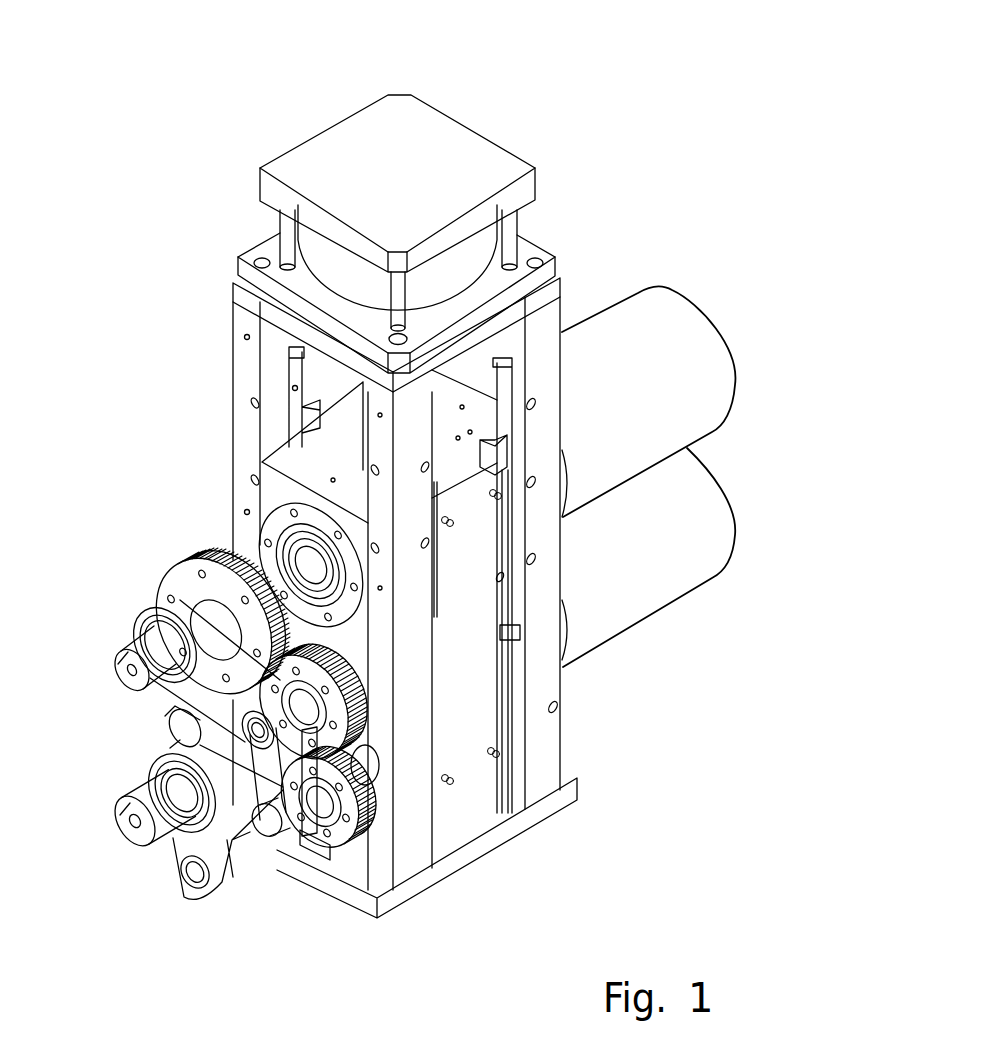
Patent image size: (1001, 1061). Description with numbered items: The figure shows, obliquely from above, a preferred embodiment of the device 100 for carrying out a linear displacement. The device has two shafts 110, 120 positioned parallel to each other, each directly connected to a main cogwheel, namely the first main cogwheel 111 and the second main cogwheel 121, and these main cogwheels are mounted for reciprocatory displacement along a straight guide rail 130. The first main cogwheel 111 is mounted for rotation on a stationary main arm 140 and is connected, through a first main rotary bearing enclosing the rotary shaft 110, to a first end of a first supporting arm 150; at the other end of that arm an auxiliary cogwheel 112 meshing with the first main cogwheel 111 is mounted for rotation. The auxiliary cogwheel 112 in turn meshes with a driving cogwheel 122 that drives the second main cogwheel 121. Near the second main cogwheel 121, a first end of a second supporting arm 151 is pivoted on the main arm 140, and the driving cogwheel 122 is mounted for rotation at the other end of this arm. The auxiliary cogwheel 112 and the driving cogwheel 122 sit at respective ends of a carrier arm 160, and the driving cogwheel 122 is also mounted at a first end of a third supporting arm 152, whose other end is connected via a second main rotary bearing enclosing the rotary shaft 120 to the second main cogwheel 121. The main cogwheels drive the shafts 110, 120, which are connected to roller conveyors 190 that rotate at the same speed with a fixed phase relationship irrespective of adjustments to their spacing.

The device 100 is at (119, 90).
The rotary shaft 110 is at (130, 823).
The first main cogwheel 111 is at (168, 722).
The auxiliary cogwheel 112 is at (327, 837).
The rotary shaft 120 is at (135, 668).
The second main cogwheel 121 is at (170, 577).
The driving cogwheel 122 is at (363, 823).
The guide rail 130 is at (410, 600).
The main arm 140 is at (192, 745).
The first supporting arm 150 is at (228, 827).
The second supporting arm 151 is at (188, 730).
The third supporting arm 152 is at (227, 553).
The carrier arm 160 is at (365, 797).
The roller conveyors 190 is at (667, 313).